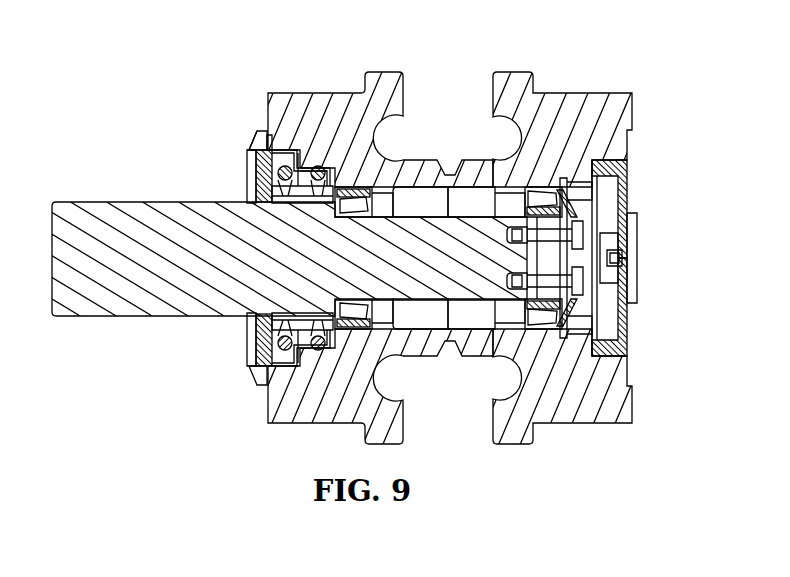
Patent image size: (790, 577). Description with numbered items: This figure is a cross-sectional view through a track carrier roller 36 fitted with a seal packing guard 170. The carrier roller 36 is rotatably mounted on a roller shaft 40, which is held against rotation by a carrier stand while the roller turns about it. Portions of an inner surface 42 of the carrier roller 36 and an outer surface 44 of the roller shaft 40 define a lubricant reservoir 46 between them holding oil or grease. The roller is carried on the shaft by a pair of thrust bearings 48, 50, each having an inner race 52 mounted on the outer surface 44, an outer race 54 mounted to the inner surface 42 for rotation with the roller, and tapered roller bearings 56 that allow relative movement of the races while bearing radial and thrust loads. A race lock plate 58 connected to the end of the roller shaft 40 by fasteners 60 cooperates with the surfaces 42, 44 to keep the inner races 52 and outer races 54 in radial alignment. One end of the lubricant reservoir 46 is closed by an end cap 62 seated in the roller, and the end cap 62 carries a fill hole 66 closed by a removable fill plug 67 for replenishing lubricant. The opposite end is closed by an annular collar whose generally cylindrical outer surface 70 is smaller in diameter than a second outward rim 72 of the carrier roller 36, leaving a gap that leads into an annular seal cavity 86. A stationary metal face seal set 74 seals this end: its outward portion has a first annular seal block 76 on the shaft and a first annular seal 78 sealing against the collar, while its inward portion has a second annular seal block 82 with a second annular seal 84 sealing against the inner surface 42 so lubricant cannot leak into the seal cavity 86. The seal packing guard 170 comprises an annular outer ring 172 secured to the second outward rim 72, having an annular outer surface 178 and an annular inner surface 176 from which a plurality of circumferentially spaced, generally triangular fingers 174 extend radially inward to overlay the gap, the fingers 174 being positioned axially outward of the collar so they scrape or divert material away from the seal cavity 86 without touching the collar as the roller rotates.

The carrier roller 36 is at (613, 398).
The roller shaft 40 is at (137, 293).
The inner surface 42 is at (425, 318).
The outer surface 44 is at (470, 332).
The lubricant reservoir 46 is at (472, 202).
The thrust bearing 48 is at (337, 330).
The thrust bearing 50 is at (540, 200).
The inner race 52 is at (578, 205).
The outer race 54 is at (345, 183).
The tapered roller bearings 56 is at (562, 203).
The race lock plate 58 is at (613, 352).
The fasteners 60 is at (578, 233).
The end cap 62 is at (617, 168).
The fill hole 66 is at (623, 247).
The fill plug 67 is at (623, 257).
The outer surface 70 is at (278, 239).
The second outward rim 72 is at (288, 150).
The metal face seal set 74 is at (316, 160).
The first annular seal block 76 is at (257, 324).
The first annular seal 78 is at (253, 344).
The second annular seal block 82 is at (252, 347).
The second annular seal 84 is at (340, 148).
The seal cavity 86 is at (307, 158).
The seal packing guard 170 is at (252, 147).
The outer ring 172 is at (259, 142).
The fingers 174 is at (254, 182).
The inner surface 176 is at (246, 163).
The outer surface 178 is at (270, 138).